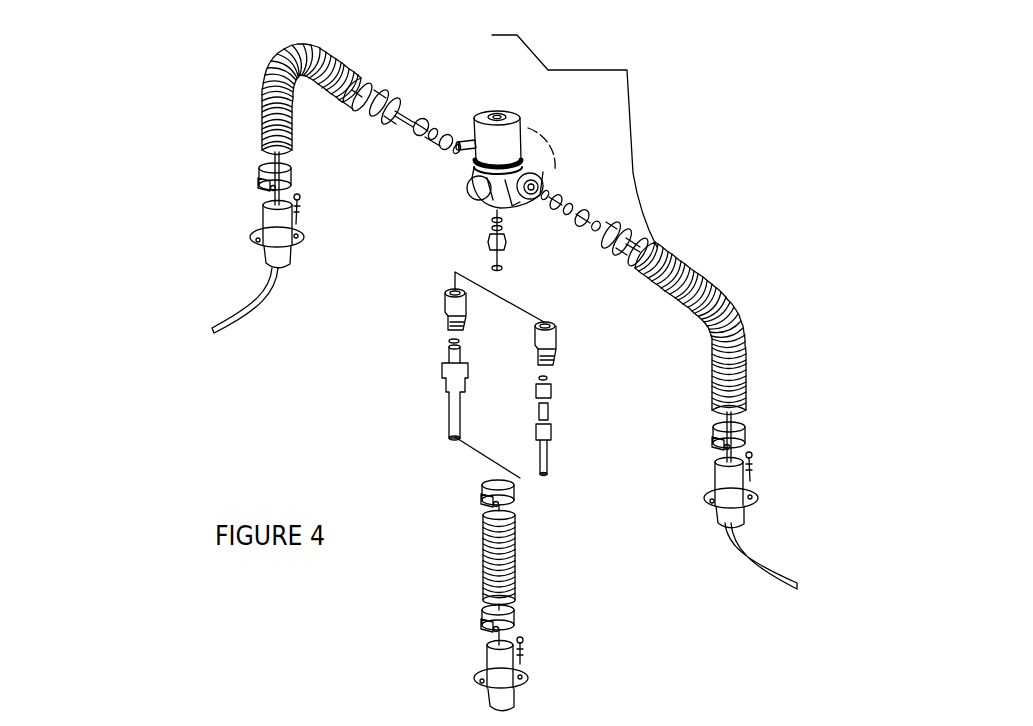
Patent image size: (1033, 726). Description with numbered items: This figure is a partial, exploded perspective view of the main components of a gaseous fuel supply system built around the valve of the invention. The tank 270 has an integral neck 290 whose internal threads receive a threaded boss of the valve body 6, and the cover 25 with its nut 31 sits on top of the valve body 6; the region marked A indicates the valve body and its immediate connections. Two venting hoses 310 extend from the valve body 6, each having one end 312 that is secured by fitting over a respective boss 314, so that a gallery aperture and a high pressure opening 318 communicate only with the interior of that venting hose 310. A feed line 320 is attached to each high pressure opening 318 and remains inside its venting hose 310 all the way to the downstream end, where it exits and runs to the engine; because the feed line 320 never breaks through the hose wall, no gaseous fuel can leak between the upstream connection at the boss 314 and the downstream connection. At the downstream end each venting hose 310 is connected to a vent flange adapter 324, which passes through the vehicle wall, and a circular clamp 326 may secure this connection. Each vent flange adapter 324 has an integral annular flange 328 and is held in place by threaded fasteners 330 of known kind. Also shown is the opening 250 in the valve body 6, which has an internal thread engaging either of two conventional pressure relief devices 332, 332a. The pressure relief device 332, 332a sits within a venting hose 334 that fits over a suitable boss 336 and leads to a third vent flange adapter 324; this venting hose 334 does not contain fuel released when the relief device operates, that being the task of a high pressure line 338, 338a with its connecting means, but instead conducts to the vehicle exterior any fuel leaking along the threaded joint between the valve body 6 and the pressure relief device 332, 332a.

The valve body 6 is at (488, 200).
The cover 25 is at (483, 115).
The nut 31 is at (492, 112).
The opening 250 is at (506, 207).
The tank 270 is at (615, 147).
The neck 290 is at (543, 153).
The venting hoses 310 is at (315, 62).
The one end 312 is at (352, 106).
The boss 314 is at (480, 163).
The high pressure opening 318 is at (545, 185).
The feed line 320 is at (242, 315).
The vent flange adapter 324 is at (270, 228).
The circular clamp 326 is at (265, 177).
The annular flange 328 is at (293, 252).
The threaded fasteners 330 is at (299, 212).
The pressure relief device 332 is at (442, 308).
The pressure relief device 332a is at (556, 355).
The venting hose 334 is at (520, 560).
The boss 336 is at (515, 205).
The high pressure line 338 is at (448, 418).
The high pressure line 338a is at (548, 462).
The detail region A is at (505, 112).